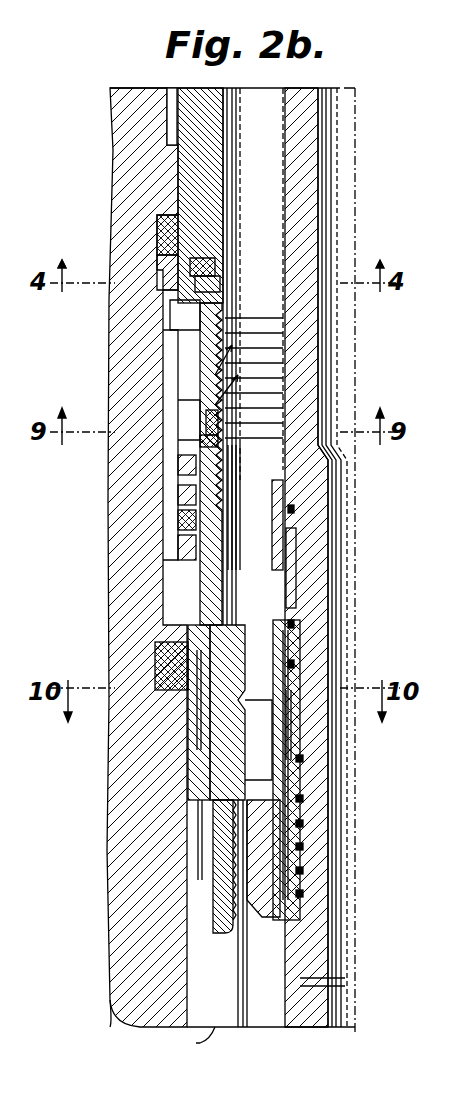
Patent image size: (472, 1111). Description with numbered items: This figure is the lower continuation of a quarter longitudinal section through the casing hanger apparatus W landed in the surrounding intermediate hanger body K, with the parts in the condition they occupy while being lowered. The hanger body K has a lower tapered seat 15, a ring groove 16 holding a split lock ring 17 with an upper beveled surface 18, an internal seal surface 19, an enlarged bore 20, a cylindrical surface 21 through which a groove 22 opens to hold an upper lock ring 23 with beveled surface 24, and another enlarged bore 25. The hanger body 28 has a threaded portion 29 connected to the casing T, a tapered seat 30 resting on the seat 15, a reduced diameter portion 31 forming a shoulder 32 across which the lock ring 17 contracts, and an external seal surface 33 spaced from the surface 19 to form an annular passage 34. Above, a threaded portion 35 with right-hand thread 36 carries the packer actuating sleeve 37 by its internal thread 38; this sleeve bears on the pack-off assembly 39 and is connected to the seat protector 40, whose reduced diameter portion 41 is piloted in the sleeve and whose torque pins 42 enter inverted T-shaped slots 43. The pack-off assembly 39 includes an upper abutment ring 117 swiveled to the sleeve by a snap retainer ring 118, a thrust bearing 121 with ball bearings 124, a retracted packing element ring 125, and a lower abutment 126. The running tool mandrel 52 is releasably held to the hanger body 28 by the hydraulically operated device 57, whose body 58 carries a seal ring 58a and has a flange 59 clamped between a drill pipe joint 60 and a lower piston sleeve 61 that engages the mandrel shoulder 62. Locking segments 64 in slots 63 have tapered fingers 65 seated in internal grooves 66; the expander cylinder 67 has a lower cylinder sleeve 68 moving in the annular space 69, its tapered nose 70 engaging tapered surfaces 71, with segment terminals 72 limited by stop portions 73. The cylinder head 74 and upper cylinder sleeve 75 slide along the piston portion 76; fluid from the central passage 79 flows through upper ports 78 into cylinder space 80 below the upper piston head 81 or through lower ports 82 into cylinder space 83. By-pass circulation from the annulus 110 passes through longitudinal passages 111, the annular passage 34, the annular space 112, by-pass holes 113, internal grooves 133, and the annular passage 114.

The seat 15 is at (170, 748).
The ring groove 16 is at (165, 655).
The lock ring 17 is at (195, 662).
The beveled surface 18 is at (200, 638).
The internal seal surface 19 is at (190, 587).
The enlarged internal bore 20 is at (192, 465).
The internal cylindrical surface 21 is at (167, 303).
The internal circumferential groove 22 is at (168, 218).
The lock ring 23 is at (168, 245).
The beveled surface 24 is at (210, 218).
The enlarged bore 25 is at (172, 108).
The hanger body 28 is at (215, 815).
The threaded portion 29 is at (220, 880).
The tapered seat 30 is at (230, 756).
The reduced external diameter portion 31 is at (185, 678).
The shoulder 32 is at (215, 700).
The external seal surface 33 is at (195, 603).
The annular passage 34 is at (188, 568).
The reduced external diameter portion 35 is at (222, 455).
The right-hand thread 36 is at (214, 490).
The packer actuating sleeve 37 is at (168, 407).
The internal thread 38 is at (215, 362).
The pack-off assembly 39 is at (188, 521).
The seat protector 40 is at (180, 152).
The reduced diameter portion 41 is at (214, 262).
The torque pins 42 is at (215, 283).
The inverted T-shaped slots 43 is at (172, 285).
The mandrel 52 is at (308, 180).
The hydraulically operated device 57 is at (270, 648).
The body 58 is at (285, 850).
The seal ring 58a is at (285, 835).
The inwardly directed flange 59 is at (292, 800).
The drill pipe joint 60 is at (310, 1005).
The lower piston sleeve 61 is at (290, 725).
The mandrel shoulder 62 is at (275, 660).
The slots 63 is at (290, 695).
The locking segments 64 is at (257, 740).
The tapered fingers 65 is at (210, 776).
The internal grooves 66 is at (220, 728).
The expander and retainer cylinder 67 is at (300, 590).
The lower cylinder sleeve 68 is at (300, 672).
The annular space 69 is at (290, 818).
The tapered nose 70 is at (300, 778).
The tapered surfaces 71 is at (300, 705).
The terminals 72 is at (200, 688).
The stop portions 73 is at (200, 715).
The cylinder head 74 is at (295, 608).
The upper cylinder sleeve 75 is at (290, 560).
The piston portion 76 is at (290, 515).
The upper ports 78 is at (300, 545).
The central mandrel passage 79 is at (345, 333).
The annular cylinder space 80 is at (290, 570).
The upper piston head 81 is at (292, 530).
The lower ports 82 is at (295, 768).
The cylinder space 83 is at (290, 680).
The annulus 110 is at (200, 968).
The longitudinal fluid passages 111 is at (292, 625).
The annular space 112 is at (186, 490).
The by-pass holes 113 is at (178, 340).
The annular passage 114 is at (290, 126).
The upper abutment ring 117 is at (186, 502).
The split snap retainer ring 118 is at (185, 478).
The thrust bearing 121 is at (188, 441).
The ball bearings 124 is at (222, 437).
The packing element ring 125 is at (186, 537).
The lower abutment 126 is at (186, 553).
The internal grooves 133 is at (218, 425).
The intermediate hanger body K is at (125, 330).
The casing hanger apparatus W is at (185, 628).
The casing T is at (198, 1041).